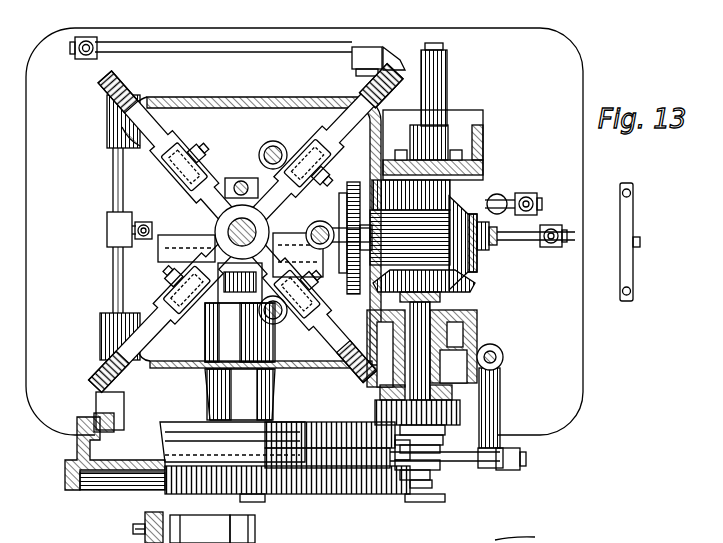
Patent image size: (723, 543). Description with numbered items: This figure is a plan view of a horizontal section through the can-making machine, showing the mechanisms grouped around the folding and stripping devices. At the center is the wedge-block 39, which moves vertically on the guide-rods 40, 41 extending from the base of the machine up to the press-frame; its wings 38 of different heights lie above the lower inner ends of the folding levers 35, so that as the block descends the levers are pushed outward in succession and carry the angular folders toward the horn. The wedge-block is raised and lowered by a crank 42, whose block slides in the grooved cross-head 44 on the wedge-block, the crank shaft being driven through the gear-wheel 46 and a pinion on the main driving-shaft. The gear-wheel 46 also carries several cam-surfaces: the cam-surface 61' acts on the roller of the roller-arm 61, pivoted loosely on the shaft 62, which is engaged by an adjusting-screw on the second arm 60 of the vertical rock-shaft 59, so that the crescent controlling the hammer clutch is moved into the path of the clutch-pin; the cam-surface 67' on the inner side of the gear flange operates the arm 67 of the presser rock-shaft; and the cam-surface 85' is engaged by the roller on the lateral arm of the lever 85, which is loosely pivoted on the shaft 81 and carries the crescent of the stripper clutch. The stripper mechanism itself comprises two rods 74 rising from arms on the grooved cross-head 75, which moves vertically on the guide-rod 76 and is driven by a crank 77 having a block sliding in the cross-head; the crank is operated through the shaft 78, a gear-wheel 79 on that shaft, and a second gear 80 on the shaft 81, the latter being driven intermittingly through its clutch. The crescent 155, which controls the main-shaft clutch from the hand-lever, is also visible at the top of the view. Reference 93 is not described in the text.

The crescent 155 is at (400, 62).
The levers 35 is at (104, 86).
The crank 77 is at (400, 178).
The rods 74 is at (280, 140).
The wings 38 is at (212, 193).
The guide-rod 41 is at (212, 190).
The wedge-block 39 is at (222, 222).
The grooved cross-head 75 is at (340, 203).
The guide-rod 76 is at (405, 222).
The grooved cross-head 44 is at (160, 258).
The guide-rod 40 is at (186, 254).
The block 93 is at (300, 256).
The crank 42 is at (214, 314).
The arm 67 is at (84, 412).
The cam-surface 67' is at (217, 423).
The cam-surface 61' is at (230, 475).
The gear-wheel 46 is at (145, 480).
The cam-surface 85' is at (283, 407).
The lever 85 is at (423, 367).
The shaft 62 is at (417, 488).
The roller-arm 61 is at (458, 478).
The vertical rock-shaft 59 is at (497, 354).
The shaft 81 is at (503, 360).
The second arm 60 is at (498, 412).
The shaft 78 is at (488, 247).
The gear-wheel 79 is at (488, 254).
The second gear 80 is at (452, 268).